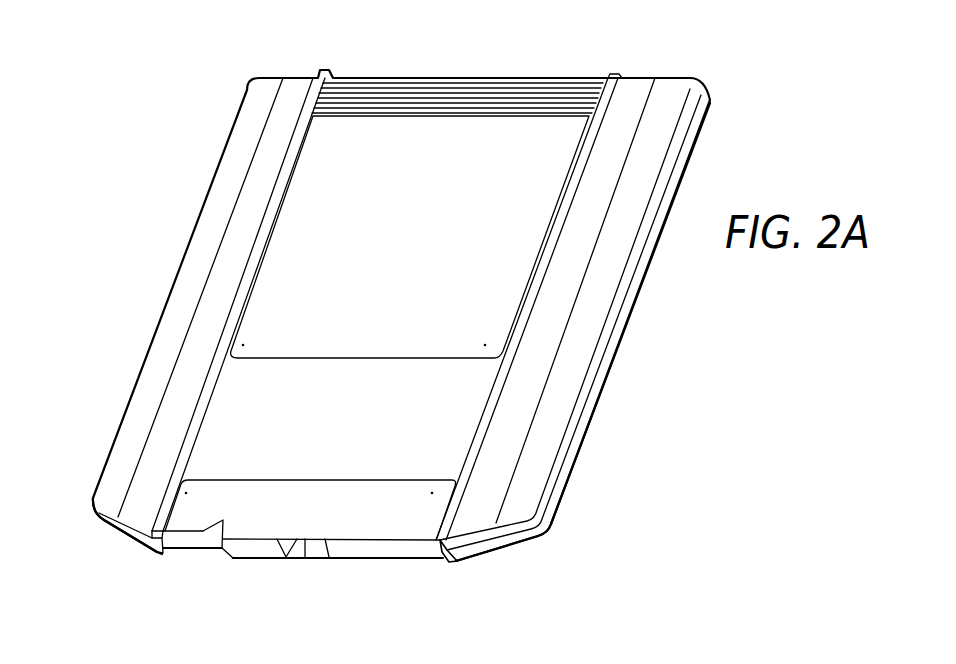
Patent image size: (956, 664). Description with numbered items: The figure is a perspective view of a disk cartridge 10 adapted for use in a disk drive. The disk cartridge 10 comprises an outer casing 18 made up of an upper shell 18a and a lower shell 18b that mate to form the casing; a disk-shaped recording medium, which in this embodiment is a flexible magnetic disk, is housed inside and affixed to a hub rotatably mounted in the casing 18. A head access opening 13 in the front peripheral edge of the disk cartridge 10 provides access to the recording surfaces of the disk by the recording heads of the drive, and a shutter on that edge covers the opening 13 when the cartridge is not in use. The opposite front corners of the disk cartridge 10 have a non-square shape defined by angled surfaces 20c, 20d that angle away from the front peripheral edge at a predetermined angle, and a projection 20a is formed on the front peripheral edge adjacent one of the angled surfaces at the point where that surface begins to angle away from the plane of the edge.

The disk cartridge 10 is at (197, 87).
The head access opening 13 is at (311, 550).
The outer casing 18 is at (547, 77).
The upper shell 18a is at (578, 425).
The lower shell 18b is at (651, 268).
The projection 20a is at (452, 564).
The angled surface 20c is at (508, 549).
The angled surface 20d is at (128, 542).